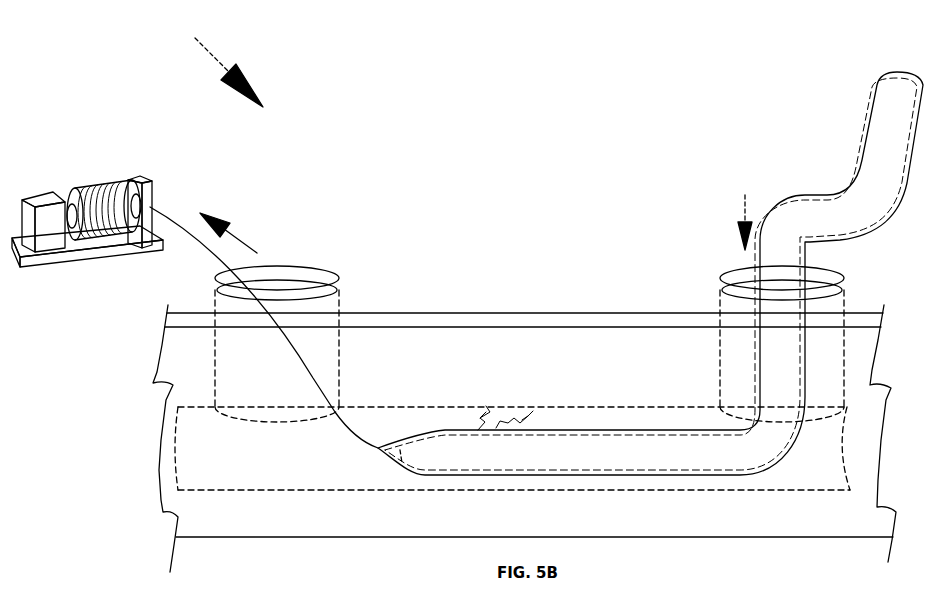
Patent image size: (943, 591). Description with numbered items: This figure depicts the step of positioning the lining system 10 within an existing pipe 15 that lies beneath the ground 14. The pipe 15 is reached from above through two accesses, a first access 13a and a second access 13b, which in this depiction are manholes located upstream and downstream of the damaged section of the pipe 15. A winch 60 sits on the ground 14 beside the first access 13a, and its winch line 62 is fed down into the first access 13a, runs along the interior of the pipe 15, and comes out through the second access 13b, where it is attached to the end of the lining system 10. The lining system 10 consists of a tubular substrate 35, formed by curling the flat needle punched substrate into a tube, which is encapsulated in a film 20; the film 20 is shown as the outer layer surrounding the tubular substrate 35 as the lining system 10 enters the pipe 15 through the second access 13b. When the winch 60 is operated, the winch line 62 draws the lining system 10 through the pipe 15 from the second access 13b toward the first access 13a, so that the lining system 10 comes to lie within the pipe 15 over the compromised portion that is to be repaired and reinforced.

The lining system 10 is at (185, 40).
The winch 60 is at (38, 198).
The winch line 62 is at (158, 214).
The first access 13a is at (294, 276).
The second access 13b is at (728, 283).
The ground 14 is at (405, 313).
The pipe 15 is at (821, 473).
The film 20 is at (563, 430).
The tubular substrate 35 is at (592, 463).